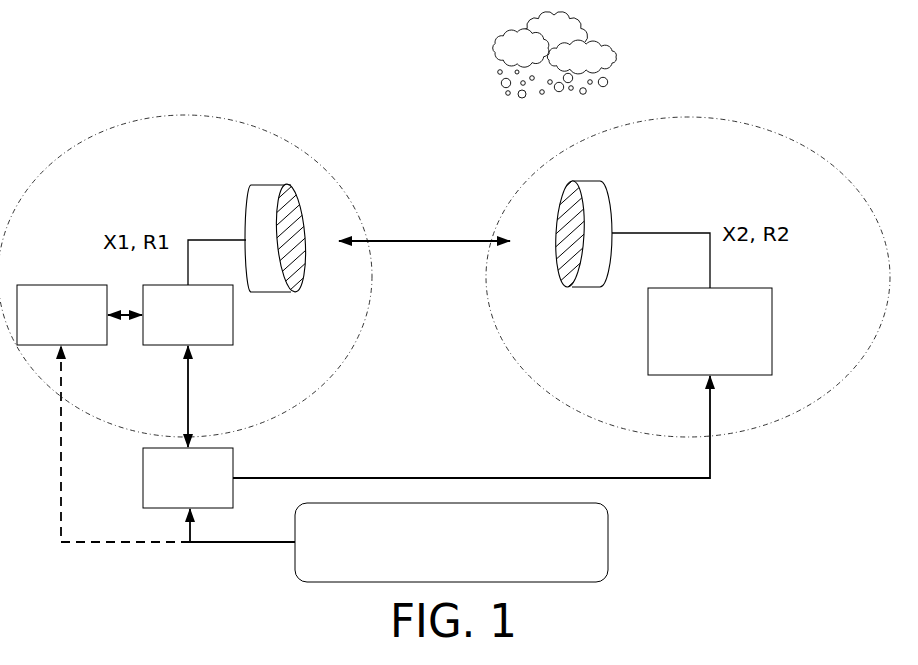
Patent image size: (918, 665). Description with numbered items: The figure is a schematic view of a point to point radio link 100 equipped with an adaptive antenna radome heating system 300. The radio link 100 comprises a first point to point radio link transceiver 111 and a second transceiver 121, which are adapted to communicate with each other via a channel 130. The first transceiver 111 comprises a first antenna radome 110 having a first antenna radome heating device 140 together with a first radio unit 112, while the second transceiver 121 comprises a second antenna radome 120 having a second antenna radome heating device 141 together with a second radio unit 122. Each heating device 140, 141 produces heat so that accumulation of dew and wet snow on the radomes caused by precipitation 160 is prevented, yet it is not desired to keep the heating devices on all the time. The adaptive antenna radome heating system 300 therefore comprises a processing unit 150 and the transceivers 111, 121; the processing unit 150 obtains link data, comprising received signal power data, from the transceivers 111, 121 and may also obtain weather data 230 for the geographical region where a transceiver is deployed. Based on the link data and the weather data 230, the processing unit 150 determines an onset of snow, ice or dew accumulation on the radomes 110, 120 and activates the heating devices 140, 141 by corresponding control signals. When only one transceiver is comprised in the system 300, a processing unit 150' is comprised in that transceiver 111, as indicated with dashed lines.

The point to point radio link 100 is at (226, 64).
The adaptive antenna radome heating system 300 is at (162, 79).
The precipitation 160 is at (470, 33).
The first point to point radio link transceiver 111 is at (304, 154).
The second transceiver 121 is at (507, 360).
The first antenna radome 110 is at (256, 185).
The second antenna radome 120 is at (611, 204).
The first antenna radome heating device 140 is at (305, 262).
The second antenna radome heating device 141 is at (569, 234).
The channel 130 is at (424, 257).
The first radio unit 112 is at (207, 326).
The processing unit 150' is at (62, 315).
The processing unit 150 is at (188, 478).
The second radio unit 122 is at (729, 346).
The weather data 230 is at (470, 540).